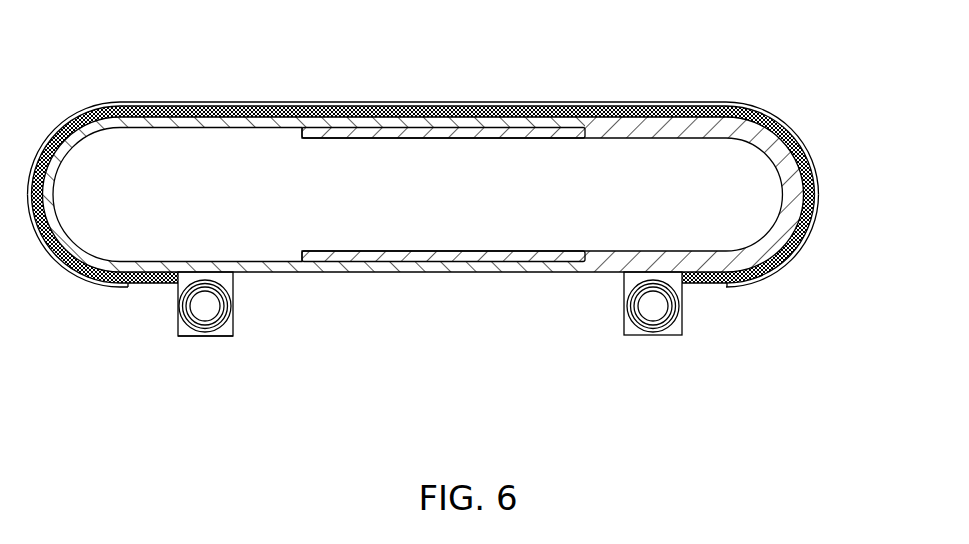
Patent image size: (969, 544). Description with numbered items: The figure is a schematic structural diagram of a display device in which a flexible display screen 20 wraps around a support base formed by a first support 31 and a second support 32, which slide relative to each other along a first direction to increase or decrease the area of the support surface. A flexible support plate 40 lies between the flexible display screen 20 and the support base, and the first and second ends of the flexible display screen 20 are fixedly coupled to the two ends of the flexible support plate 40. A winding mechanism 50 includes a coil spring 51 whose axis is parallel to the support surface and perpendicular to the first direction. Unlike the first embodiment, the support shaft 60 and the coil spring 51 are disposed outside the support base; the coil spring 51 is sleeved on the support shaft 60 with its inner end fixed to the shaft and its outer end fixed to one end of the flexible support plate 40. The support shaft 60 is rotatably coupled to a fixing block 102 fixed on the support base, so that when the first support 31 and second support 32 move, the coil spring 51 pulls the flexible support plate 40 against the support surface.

The flexible display screen 20 is at (192, 101).
The flexible support plate 40 is at (243, 117).
The first support 31 is at (130, 285).
The second support 32 is at (722, 286).
The winding mechanism 50 is at (420, 289).
The coil spring 51 is at (180, 336).
The support shaft 60 is at (205, 306).
The fixing block 102 is at (222, 336).